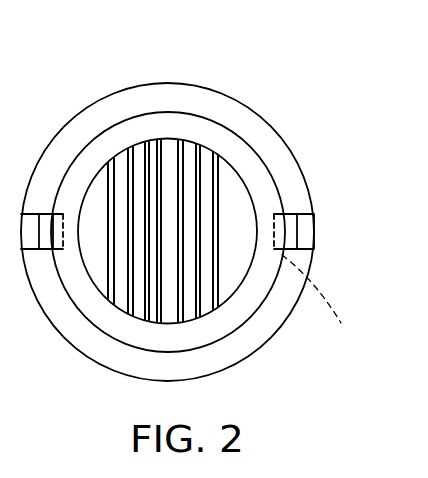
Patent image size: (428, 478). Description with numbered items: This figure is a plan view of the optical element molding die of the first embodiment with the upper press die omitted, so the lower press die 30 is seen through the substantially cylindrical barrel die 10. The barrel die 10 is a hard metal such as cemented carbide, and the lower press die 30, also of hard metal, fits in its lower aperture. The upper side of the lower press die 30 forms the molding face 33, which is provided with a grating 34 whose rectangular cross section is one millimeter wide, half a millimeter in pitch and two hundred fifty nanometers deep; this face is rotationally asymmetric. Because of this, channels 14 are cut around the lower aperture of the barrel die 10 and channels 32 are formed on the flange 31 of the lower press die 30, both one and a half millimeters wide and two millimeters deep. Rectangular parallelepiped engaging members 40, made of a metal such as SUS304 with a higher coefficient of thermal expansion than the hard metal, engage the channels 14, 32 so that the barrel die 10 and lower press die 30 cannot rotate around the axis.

The barrel die 10 is at (264, 190).
The channels 14 is at (323, 303).
The lower press die 30 is at (314, 193).
The flange 31 is at (247, 337).
The channels 32 is at (300, 223).
The molding face 33 is at (229, 208).
The grating 34 is at (145, 172).
The engaging members 40 is at (314, 238).